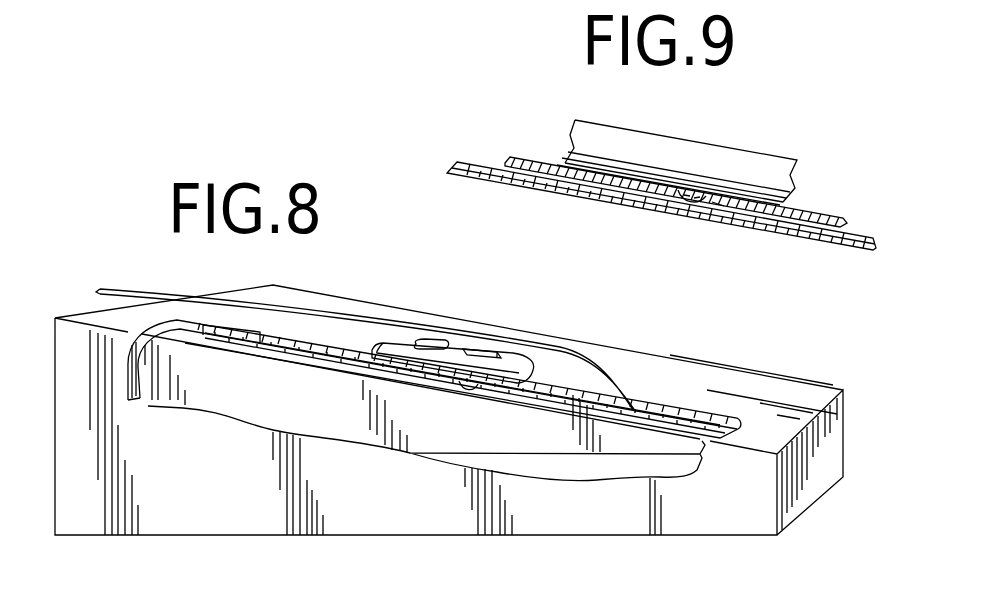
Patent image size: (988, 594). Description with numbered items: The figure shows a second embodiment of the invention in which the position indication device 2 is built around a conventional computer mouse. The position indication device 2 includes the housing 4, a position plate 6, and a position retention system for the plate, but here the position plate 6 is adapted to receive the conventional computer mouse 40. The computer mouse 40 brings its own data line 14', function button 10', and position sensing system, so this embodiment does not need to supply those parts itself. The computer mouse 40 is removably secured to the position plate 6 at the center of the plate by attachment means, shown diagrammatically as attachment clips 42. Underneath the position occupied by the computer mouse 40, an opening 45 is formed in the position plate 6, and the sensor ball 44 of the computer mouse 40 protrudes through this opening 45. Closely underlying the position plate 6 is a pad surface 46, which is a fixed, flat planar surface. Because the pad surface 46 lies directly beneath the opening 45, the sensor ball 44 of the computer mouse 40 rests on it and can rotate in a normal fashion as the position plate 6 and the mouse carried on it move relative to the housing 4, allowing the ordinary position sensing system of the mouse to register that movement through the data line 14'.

In FIG. 8, the position indication device 2 is at (851, 415).
In FIG. 8, the housing 4 is at (718, 392).
In FIG. 8, the position plate 6 is at (588, 392).
In FIG. 9, the position plate 6 is at (800, 202).
In FIG. 8, the function button 10' is at (422, 301).
In FIG. 8, the data line 14' is at (358, 316).
In FIG. 8, the computer mouse 40 is at (386, 339).
In FIG. 9, the computer mouse 40 is at (702, 143).
In FIG. 8, the attachment clips 42 is at (488, 347).
In FIG. 8, the sensor ball 44 is at (470, 386).
In FIG. 9, the sensor ball 44 is at (683, 190).
In FIG. 9, the opening 45 is at (718, 202).
In FIG. 8, the pad surface 46 is at (580, 406).
In FIG. 9, the pad surface 46 is at (855, 235).